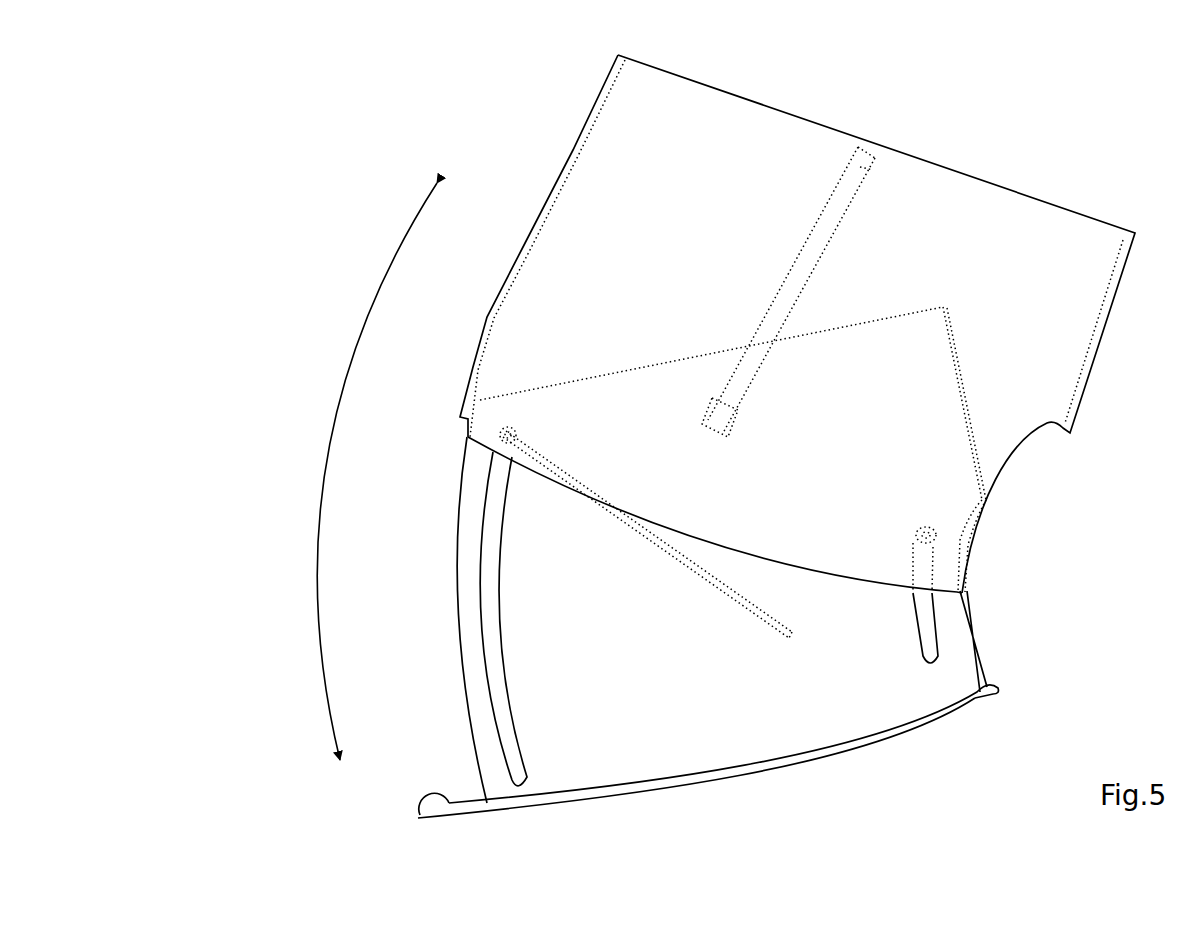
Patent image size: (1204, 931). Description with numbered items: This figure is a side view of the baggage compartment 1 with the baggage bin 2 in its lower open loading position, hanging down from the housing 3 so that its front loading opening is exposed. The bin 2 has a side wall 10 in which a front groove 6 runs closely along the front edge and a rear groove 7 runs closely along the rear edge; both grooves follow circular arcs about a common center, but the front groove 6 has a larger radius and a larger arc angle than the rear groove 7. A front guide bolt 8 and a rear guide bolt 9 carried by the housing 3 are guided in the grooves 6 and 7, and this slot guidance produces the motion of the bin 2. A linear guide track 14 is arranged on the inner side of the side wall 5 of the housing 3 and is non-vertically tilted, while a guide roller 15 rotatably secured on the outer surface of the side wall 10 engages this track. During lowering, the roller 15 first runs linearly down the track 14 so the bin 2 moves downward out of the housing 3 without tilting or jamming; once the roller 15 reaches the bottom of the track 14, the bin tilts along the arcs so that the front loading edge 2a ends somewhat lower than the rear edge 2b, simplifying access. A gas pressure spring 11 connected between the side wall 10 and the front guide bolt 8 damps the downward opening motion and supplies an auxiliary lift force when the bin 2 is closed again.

The baggage compartment 1 is at (319, 302).
The baggage bin 2 is at (873, 688).
The front loading edge 2a is at (432, 807).
The rear edge 2b is at (995, 686).
The housing 3 is at (1013, 388).
The side wall of the housing 5 is at (932, 251).
The front groove 6 is at (492, 648).
The rear groove 7 is at (927, 627).
The front guide bolt 8 is at (507, 430).
The guide bolt 9 is at (937, 533).
The side wall 10 is at (748, 716).
The gas pressure spring 11 is at (642, 535).
The linear guide track 14 is at (778, 320).
The guide roller 15 is at (728, 408).